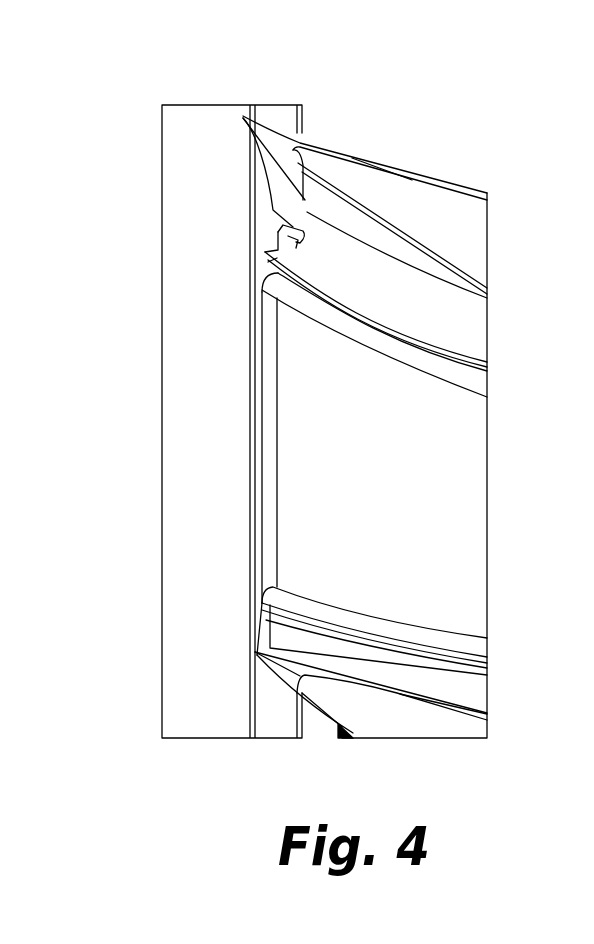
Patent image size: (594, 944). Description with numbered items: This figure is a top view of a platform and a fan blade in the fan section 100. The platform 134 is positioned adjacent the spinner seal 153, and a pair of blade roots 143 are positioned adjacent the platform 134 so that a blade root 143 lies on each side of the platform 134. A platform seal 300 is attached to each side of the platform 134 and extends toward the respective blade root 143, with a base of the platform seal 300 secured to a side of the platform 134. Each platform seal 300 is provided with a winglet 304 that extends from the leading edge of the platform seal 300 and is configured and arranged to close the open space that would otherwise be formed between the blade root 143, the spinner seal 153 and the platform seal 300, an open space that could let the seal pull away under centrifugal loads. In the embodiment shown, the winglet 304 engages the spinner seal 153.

The fan section 100 is at (460, 94).
The platform 134 is at (446, 470).
The blade root 143 is at (473, 228).
The spinner seal 153 is at (272, 727).
The platform seal 300 is at (480, 338).
The winglet 304 is at (298, 236).